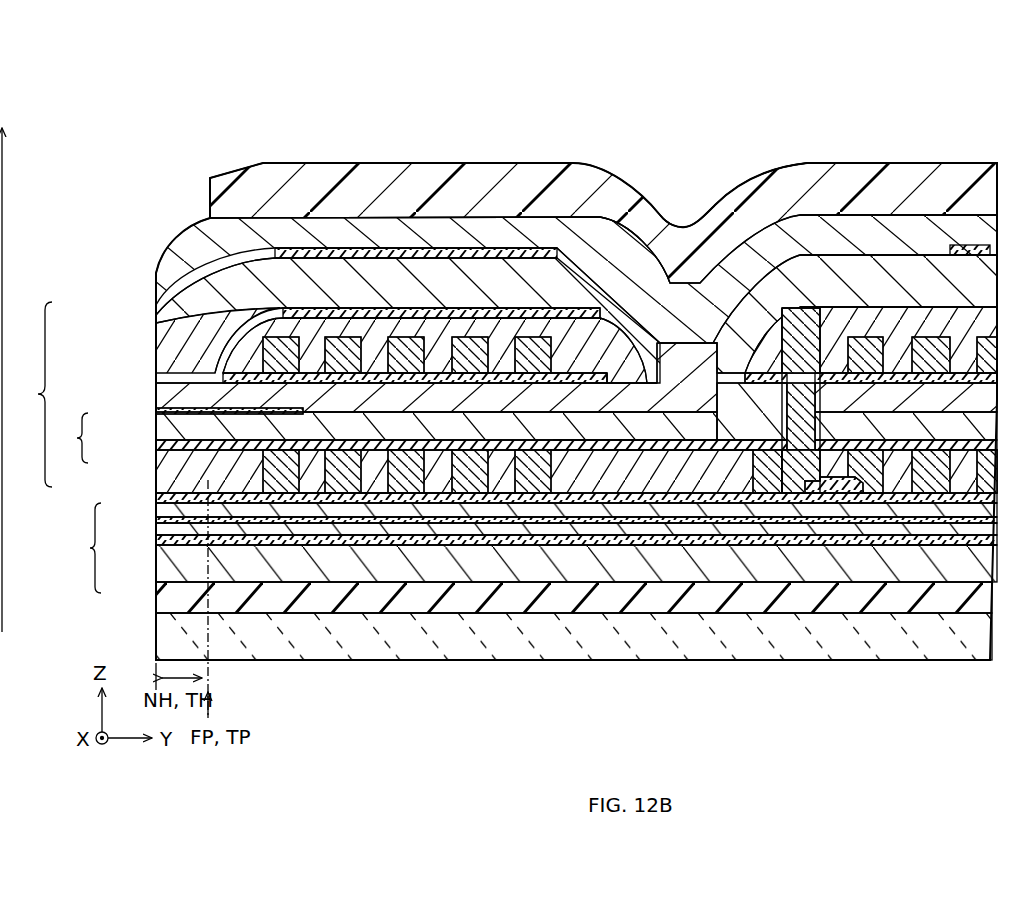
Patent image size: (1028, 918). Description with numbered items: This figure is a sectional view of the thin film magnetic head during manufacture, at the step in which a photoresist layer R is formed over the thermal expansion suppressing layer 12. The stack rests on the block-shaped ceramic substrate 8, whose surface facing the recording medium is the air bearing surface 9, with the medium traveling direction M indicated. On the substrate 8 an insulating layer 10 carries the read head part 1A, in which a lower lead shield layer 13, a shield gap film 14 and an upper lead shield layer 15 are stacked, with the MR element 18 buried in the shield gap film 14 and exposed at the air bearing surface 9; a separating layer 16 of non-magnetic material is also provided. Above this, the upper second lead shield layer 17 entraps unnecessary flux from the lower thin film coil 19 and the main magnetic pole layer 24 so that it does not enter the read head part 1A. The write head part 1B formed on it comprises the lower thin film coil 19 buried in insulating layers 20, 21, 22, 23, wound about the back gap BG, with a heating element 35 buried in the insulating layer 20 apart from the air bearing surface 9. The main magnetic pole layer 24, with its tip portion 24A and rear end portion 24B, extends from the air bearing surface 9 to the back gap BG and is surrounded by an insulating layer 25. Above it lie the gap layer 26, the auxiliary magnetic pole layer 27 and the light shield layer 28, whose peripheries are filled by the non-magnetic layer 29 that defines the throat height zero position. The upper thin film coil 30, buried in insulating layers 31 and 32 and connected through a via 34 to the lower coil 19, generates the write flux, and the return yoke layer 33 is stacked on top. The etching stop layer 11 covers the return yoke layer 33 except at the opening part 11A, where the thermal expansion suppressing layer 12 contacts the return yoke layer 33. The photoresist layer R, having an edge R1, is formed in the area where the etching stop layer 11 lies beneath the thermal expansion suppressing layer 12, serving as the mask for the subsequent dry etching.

The thermal expansion suppressing layer 12 is at (303, 228).
The return yoke layer 33 is at (388, 283).
The insulating layer 31 is at (440, 315).
The insulating layer 32 is at (500, 325).
The opening part 11A is at (578, 248).
The photoresist layer R is at (795, 168).
The edge of photoresist layer R1 is at (200, 176).
The insulating layer 25 is at (880, 427).
The non-magnetic layer 29 is at (158, 376).
The etching stop layer 11 is at (156, 272).
The air bearing surface 9 is at (148, 306).
The upper thin film coil 30 is at (156, 318).
The auxiliary magnetic pole layer 27 is at (156, 345).
The light shield layer 28 is at (160, 392).
The gap layer 26 is at (158, 414).
The tip portion 24A is at (160, 432).
The rear end portion 24B is at (160, 447).
The main magnetic pole layer 24 is at (69, 438).
The lower thin film coil 19 is at (160, 478).
The upper second lead shield layer 17 is at (160, 500).
The upper lead shield layer 15 is at (160, 522).
The MR element 18 is at (160, 540).
The lower lead shield layer 13 is at (160, 572).
The insulating layer 10 is at (877, 605).
The substrate 8 is at (160, 640).
The insulating layer 20 is at (540, 497).
The insulating layer 21 is at (578, 477).
The insulating layer 22 is at (620, 463).
The back gap BG is at (660, 386).
The insulating layer 23 is at (700, 445).
The via 34 is at (800, 427).
The heating element 35 is at (837, 494).
The shield gap film 14 is at (915, 555).
The separating layer 16 is at (960, 520).
The medium traveling direction M is at (2, 632).
The read head part 1A is at (80, 548).
The write head part 1B is at (31, 394).